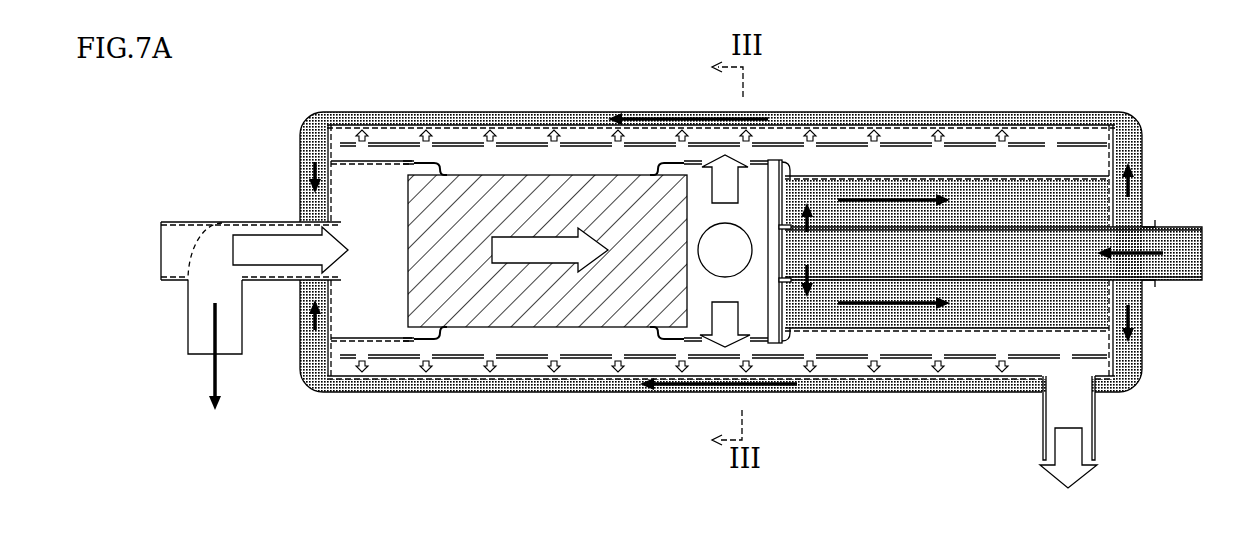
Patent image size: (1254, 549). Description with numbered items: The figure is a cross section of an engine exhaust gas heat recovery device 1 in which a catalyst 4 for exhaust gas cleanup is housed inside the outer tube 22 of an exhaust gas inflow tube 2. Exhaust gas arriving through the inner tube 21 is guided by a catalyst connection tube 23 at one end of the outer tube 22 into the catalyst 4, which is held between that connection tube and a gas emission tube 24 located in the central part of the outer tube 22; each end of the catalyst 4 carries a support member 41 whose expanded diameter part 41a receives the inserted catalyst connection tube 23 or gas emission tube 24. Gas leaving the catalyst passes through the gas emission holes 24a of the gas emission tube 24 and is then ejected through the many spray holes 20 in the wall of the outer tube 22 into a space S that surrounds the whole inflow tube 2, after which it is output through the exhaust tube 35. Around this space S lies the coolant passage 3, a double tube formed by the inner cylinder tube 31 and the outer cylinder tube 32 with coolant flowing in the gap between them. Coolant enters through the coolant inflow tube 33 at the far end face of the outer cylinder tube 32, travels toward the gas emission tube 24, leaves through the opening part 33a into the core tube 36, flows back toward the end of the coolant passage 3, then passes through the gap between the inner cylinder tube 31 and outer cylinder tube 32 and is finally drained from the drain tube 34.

The engine exhaust gas heat recovery device 1 is at (255, 79).
The exhaust gas inflow tube 2 is at (583, 127).
The coolant passage 3 is at (960, 112).
The catalyst 4 is at (494, 183).
The spray holes 20 is at (808, 133).
The inner tube 21 is at (213, 222).
The outer tube 22 is at (468, 360).
The catalyst connection tube 23 is at (380, 342).
The gas emission tube 24 is at (757, 347).
The gas emission holes 24a is at (712, 255).
The inner cylinder tube 31 is at (958, 140).
The outer cylinder tube 32 is at (917, 127).
The coolant inflow tube 33 is at (1170, 227).
The opening part 33a is at (807, 278).
The drain tube 34 is at (187, 315).
The exhaust tube 35 is at (1097, 423).
The core tube 36 is at (1075, 177).
The space S is at (1060, 138).
The support member 41 is at (444, 170).
The expanded diameter part 41a is at (405, 157).